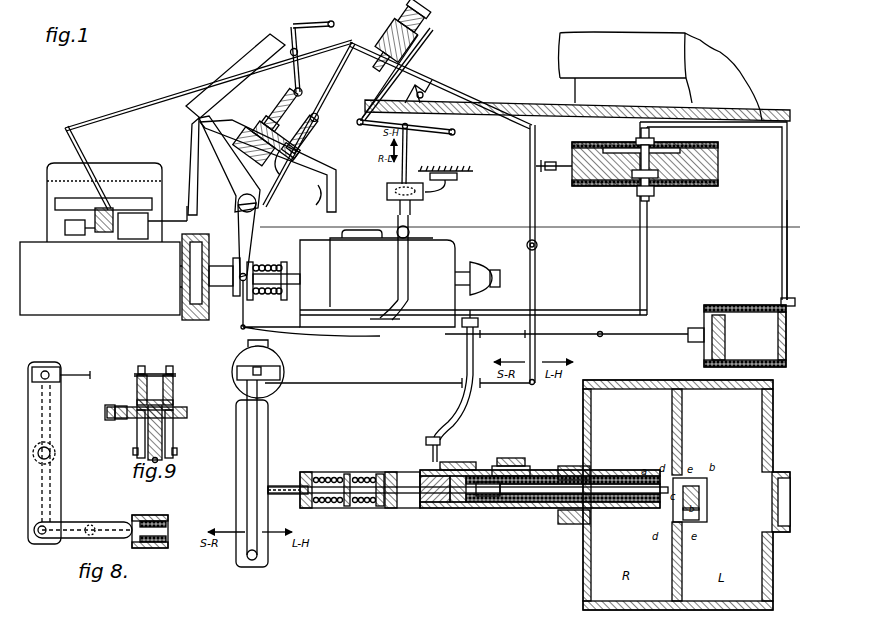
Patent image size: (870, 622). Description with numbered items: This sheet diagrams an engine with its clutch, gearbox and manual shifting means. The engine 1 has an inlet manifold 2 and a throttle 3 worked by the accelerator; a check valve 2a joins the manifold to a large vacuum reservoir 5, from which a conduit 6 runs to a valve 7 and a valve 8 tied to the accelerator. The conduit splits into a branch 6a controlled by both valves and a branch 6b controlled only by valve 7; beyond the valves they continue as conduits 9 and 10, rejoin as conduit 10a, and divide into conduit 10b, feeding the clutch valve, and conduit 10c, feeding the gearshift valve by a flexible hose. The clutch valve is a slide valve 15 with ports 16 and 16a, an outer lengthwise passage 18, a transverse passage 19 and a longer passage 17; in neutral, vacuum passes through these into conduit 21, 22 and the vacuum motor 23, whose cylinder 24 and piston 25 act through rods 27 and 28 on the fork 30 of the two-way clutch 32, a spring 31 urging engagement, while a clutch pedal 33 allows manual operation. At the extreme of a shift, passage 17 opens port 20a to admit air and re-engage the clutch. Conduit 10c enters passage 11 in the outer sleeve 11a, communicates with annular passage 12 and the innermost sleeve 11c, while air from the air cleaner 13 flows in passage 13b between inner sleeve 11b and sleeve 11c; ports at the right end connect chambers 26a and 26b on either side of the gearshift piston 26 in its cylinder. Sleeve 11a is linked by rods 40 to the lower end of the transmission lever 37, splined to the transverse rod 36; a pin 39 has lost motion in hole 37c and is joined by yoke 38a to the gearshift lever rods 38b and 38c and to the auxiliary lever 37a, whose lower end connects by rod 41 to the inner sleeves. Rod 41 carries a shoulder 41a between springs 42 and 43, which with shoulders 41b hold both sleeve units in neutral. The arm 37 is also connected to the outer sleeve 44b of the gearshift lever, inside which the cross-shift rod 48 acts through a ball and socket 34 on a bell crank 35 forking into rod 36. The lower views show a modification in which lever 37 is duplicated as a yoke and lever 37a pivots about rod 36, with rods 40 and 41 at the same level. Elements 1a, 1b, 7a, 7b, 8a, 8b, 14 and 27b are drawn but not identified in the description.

In FIG. 1, the engine 1 is at (52, 172).
In FIG. 1, the gear box 1a is at (448, 250).
In FIG. 1, the output coupling 1b is at (486, 272).
In FIG. 1, the inlet manifold 2 is at (55, 204).
In FIG. 1, the check valve 2a is at (137, 207).
In FIG. 1, the throttle 3 is at (65, 229).
In FIG. 1, the reservoir 5 is at (133, 226).
In FIG. 1, the conduit 6 is at (188, 204).
In FIG. 1, the conduit 6a is at (269, 120).
In FIG. 1, the conduit 6b is at (244, 147).
In FIG. 1, the valve 7 is at (291, 25).
In FIG. 1, the shaft portion 7a is at (281, 139).
In FIG. 1, the coupling 7b is at (293, 100).
In FIG. 1, the valve 8 is at (312, 131).
In FIG. 1, the shaft end 8a is at (291, 162).
In FIG. 1, the coupling 8b is at (313, 141).
In FIG. 1, the conduit 9 is at (313, 195).
In FIG. 1, the conduit 10 is at (318, 158).
In FIG. 1, the conduit 10a is at (331, 256).
In FIG. 1, the conduit 10b is at (473, 303).
In FIG. 1, the conduit 10c is at (479, 322).
In FIG. 1, the passage 11 is at (455, 470).
In FIG. 1, the outer sleeve 11a is at (490, 475).
In FIG. 8, the outer sleeve 11a is at (152, 511).
In FIG. 1, the inner sleeve 11b is at (538, 478).
In FIG. 1, the innermost sleeve 11c is at (532, 504).
In FIG. 1, the annular passage 12 is at (432, 506).
In FIG. 1, the air cleaner 13 is at (525, 462).
In FIG. 1, the air passage 13b is at (506, 482).
In FIG. 1, the rod 14 is at (550, 171).
In FIG. 1, the slide valve 15 is at (578, 186).
In FIG. 1, the passage 16 is at (642, 195).
In FIG. 1, the passage 16a is at (652, 141).
In FIG. 1, the lengthwise passage 17 is at (616, 142).
In FIG. 1, the lengthwise passage 18 is at (654, 186).
In FIG. 1, the transverse passage 19 is at (636, 178).
In FIG. 1, the port 20a is at (592, 142).
In FIG. 1, the conduit 21 is at (787, 258).
In FIG. 1, the conduit 22 is at (781, 302).
In FIG. 1, the vacuum motor 23 is at (768, 366).
In FIG. 1, the cylinder 24 is at (745, 336).
In FIG. 1, the piston 25 is at (712, 355).
In FIG. 1, the piston 26 is at (683, 440).
In FIG. 1, the chamber 26a is at (624, 434).
In FIG. 1, the chamber 26b is at (735, 434).
In FIG. 1, the rod 27 is at (640, 336).
In FIG. 1, the valve wall 27b is at (583, 406).
In FIG. 1, the rod 28 is at (405, 327).
In FIG. 1, the fork 30 is at (242, 282).
In FIG. 1, the spring 31 is at (264, 262).
In FIG. 1, the two-way clutch 32 is at (197, 315).
In FIG. 1, the clutch pedal 33 is at (245, 50).
In FIG. 1, the ball and socket 34 is at (392, 190).
In FIG. 1, the bell crank 35 is at (400, 212).
In FIG. 9, the transverse rod 36 is at (187, 413).
In FIG. 8, the transverse rod 36 is at (52, 455).
In FIG. 1, the transmission lever 37 is at (409, 272).
In FIG. 9, the transmission lever 37 is at (137, 432).
In FIG. 8, the transmission lever 37 is at (61, 440).
In FIG. 1, the auxiliary transmission operating lever 37a is at (247, 408).
In FIG. 9, the auxiliary transmission operating lever 37a is at (147, 384).
In FIG. 8, the auxiliary transmission operating lever 37a is at (50, 412).
In FIG. 1, the hole 37c is at (258, 343).
In FIG. 9, the hole 37c is at (170, 368).
In FIG. 8, the hole 37c is at (50, 380).
In FIG. 1, the yoke 38a is at (308, 383).
In FIG. 1, the gearshift lever rod 38b is at (462, 385).
In FIG. 9, the gearshift lever rod 38b is at (150, 366).
In FIG. 8, the gearshift lever rod 38b is at (70, 372).
In FIG. 1, the gearshift lever rod 38c is at (530, 172).
In FIG. 1, the pin 39 is at (237, 373).
In FIG. 9, the pin 39 is at (138, 373).
In FIG. 8, the pin 39 is at (47, 367).
In FIG. 1, the rods 40 is at (288, 484).
In FIG. 9, the rods 40 is at (176, 449).
In FIG. 8, the rods 40 is at (100, 528).
In FIG. 1, the rod 41 is at (287, 494).
In FIG. 9, the rod 41 is at (160, 460).
In FIG. 8, the rod 41 is at (76, 526).
In FIG. 1, the shoulder 41a is at (347, 508).
In FIG. 1, the additional shoulders 41b is at (306, 508).
In FIG. 1, the spring 42 is at (324, 477).
In FIG. 1, the spring 43 is at (360, 477).
In FIG. 1, the outer sleeve 44b is at (435, 33).
In FIG. 1, the rod 48 is at (360, 118).